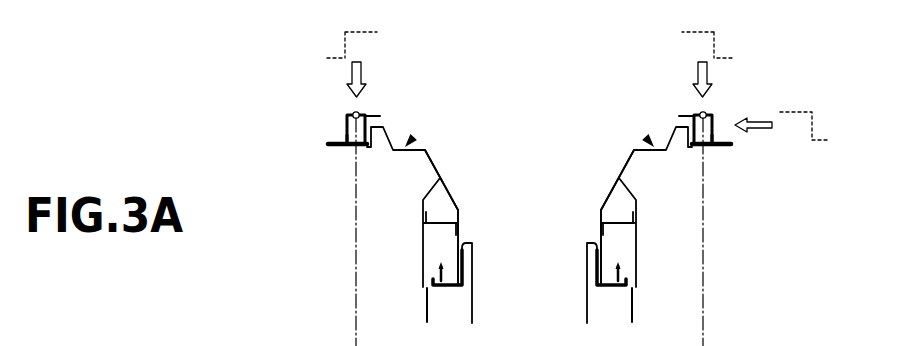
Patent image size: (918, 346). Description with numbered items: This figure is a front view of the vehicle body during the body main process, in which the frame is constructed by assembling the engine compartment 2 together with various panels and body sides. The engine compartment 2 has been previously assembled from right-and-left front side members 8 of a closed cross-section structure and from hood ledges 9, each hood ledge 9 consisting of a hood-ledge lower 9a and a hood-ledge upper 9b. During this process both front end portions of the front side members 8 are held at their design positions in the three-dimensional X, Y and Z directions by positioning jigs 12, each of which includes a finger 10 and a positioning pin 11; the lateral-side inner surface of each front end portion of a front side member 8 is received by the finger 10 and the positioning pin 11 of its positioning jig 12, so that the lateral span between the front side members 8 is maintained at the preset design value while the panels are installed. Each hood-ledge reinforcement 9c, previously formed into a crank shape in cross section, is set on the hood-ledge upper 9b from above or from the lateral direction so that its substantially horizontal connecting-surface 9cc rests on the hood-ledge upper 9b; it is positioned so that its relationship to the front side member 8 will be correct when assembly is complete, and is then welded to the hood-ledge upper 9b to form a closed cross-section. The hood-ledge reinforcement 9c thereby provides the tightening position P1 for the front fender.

The hood-ledge reinforcement 9c is at (345, 32).
The connecting-surface of hood-ledge reinforcement 9cc is at (380, 115).
The hood ledge 9 is at (405, 147).
The hood-ledge lower 9a is at (432, 150).
The hood-ledge upper 9b is at (342, 150).
The engine compartment 2 is at (398, 170).
The front side member 8 is at (420, 237).
The finger 10 is at (473, 287).
The positioning pin 11 is at (440, 277).
The positioning jig 12 is at (425, 303).
The tightening position P1 is at (358, 112).